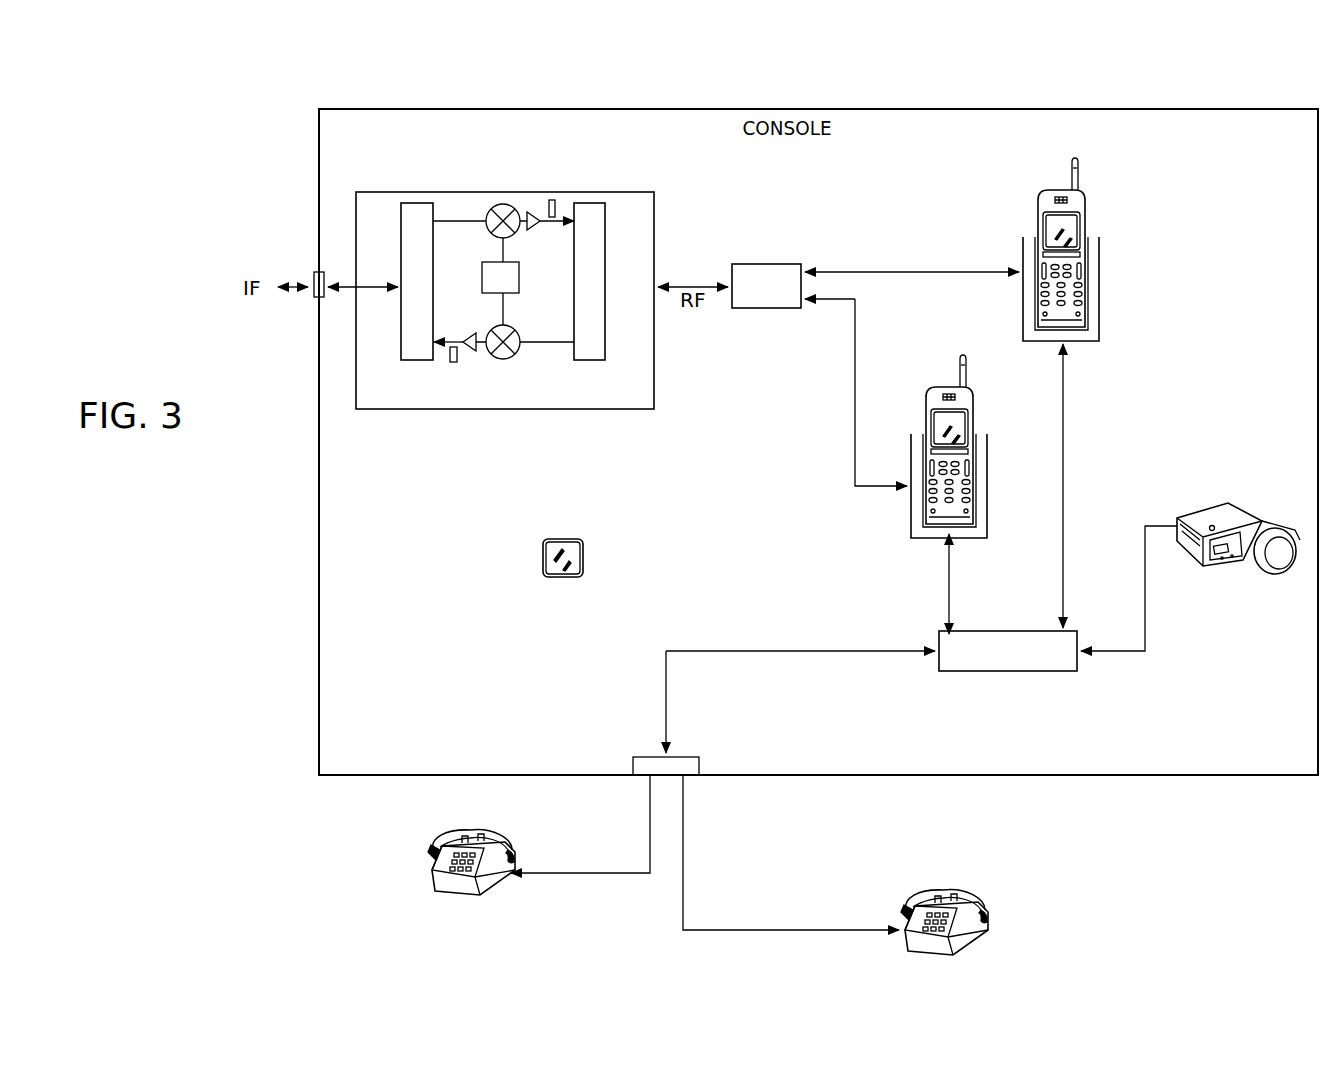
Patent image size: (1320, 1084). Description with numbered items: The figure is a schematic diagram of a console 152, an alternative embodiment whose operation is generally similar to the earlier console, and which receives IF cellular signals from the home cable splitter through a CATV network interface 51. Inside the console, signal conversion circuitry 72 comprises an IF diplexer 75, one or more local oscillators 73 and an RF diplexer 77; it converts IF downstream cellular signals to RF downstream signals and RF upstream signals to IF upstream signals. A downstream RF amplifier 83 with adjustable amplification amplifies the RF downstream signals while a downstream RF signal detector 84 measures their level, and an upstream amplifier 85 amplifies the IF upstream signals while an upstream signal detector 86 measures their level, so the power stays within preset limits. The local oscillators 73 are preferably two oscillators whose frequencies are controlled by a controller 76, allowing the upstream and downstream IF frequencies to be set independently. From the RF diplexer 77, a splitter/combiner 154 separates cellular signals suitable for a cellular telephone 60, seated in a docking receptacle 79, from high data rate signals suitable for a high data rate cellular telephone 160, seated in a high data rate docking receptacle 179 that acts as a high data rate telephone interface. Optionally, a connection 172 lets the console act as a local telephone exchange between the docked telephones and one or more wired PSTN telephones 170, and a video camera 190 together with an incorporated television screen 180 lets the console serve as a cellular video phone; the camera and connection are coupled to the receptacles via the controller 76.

The CATV network interface 51 is at (314, 274).
The cellular telephone 60 is at (1085, 205).
The signal conversion circuitry 72 is at (654, 367).
The local oscillator 73 is at (511, 294).
The IF diplexer 75 is at (401, 227).
The controller 76 is at (1005, 631).
The RF diplexer 77 is at (605, 225).
The docking receptacle 79 is at (1085, 249).
The downstream RF amplifier 83 is at (533, 214).
The downstream RF signal detector 84 is at (557, 199).
The upstream amplifier 85 is at (470, 340).
The upstream signal detector 86 is at (450, 360).
The console 152 is at (318, 197).
The splitter/combiner 154 is at (782, 264).
The high data rate cellular telephone 160 is at (971, 400).
The PSTN telephone 170 is at (474, 831).
The connection 172 is at (640, 757).
The high data rate docking receptacle 179 is at (981, 446).
The television screen 180 is at (583, 548).
The video camera 190 is at (1215, 503).